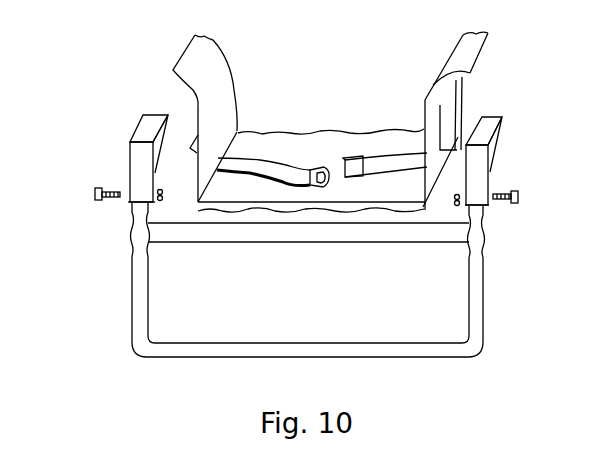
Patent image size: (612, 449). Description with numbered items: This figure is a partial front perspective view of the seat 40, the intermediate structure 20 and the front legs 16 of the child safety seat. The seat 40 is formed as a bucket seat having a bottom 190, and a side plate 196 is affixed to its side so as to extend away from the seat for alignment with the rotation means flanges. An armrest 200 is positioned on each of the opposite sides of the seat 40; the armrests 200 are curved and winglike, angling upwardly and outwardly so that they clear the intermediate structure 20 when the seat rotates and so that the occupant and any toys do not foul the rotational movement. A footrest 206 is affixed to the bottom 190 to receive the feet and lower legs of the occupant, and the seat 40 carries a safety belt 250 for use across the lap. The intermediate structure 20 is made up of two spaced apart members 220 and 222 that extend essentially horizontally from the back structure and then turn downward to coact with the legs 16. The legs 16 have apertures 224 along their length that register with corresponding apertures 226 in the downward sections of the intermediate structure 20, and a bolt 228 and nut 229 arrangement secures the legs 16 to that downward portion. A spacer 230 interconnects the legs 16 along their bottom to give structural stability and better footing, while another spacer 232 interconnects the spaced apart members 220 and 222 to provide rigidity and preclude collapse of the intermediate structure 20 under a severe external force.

The front legs 16 is at (148, 302).
The intermediate structure 20 is at (128, 157).
The seat 40 is at (313, 72).
The bottom 190 is at (323, 150).
The side plate 196 is at (463, 110).
The armrest 200 is at (213, 60).
The footrest 206 is at (349, 207).
The spaced apart member 220 is at (502, 132).
The spaced apart member 222 is at (133, 138).
The apertures 224 is at (148, 253).
The apertures 226 is at (130, 203).
The bolt 228 is at (103, 190).
The nut 229 is at (163, 197).
The spacer 230 is at (265, 343).
The spacer 232 is at (253, 242).
The safety belt 250 is at (258, 162).